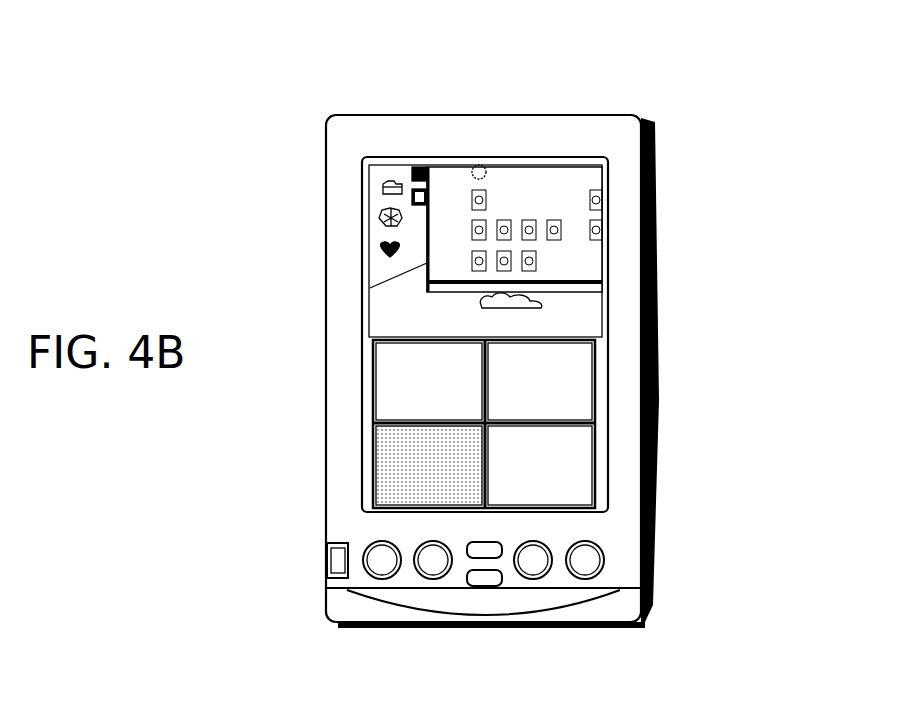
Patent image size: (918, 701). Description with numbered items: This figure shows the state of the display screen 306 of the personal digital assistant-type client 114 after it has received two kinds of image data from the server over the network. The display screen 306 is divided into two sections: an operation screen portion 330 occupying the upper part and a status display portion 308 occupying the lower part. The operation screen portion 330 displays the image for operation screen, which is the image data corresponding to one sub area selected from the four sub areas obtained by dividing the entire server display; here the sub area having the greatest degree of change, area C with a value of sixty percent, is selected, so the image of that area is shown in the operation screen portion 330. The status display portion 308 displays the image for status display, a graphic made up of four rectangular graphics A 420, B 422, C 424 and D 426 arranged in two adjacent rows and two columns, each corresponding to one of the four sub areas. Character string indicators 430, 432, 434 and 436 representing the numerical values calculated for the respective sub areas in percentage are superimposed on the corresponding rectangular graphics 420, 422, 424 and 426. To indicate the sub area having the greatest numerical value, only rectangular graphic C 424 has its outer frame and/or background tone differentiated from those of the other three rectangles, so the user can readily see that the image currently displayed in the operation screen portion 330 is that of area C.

The client 114 is at (667, 189).
The display screen 306 is at (462, 158).
The operation screen portion 330 is at (608, 263).
The status display portion 308 is at (597, 500).
The rectangular graphic A 420 is at (393, 362).
The character string indicator 430 is at (438, 403).
The rectangular graphic B 422 is at (570, 362).
The character string indicator 432 is at (573, 395).
The rectangular graphic C 424 is at (403, 445).
The character string indicator 434 is at (438, 483).
The rectangular graphic D 426 is at (570, 438).
The character string indicator 436 is at (573, 477).